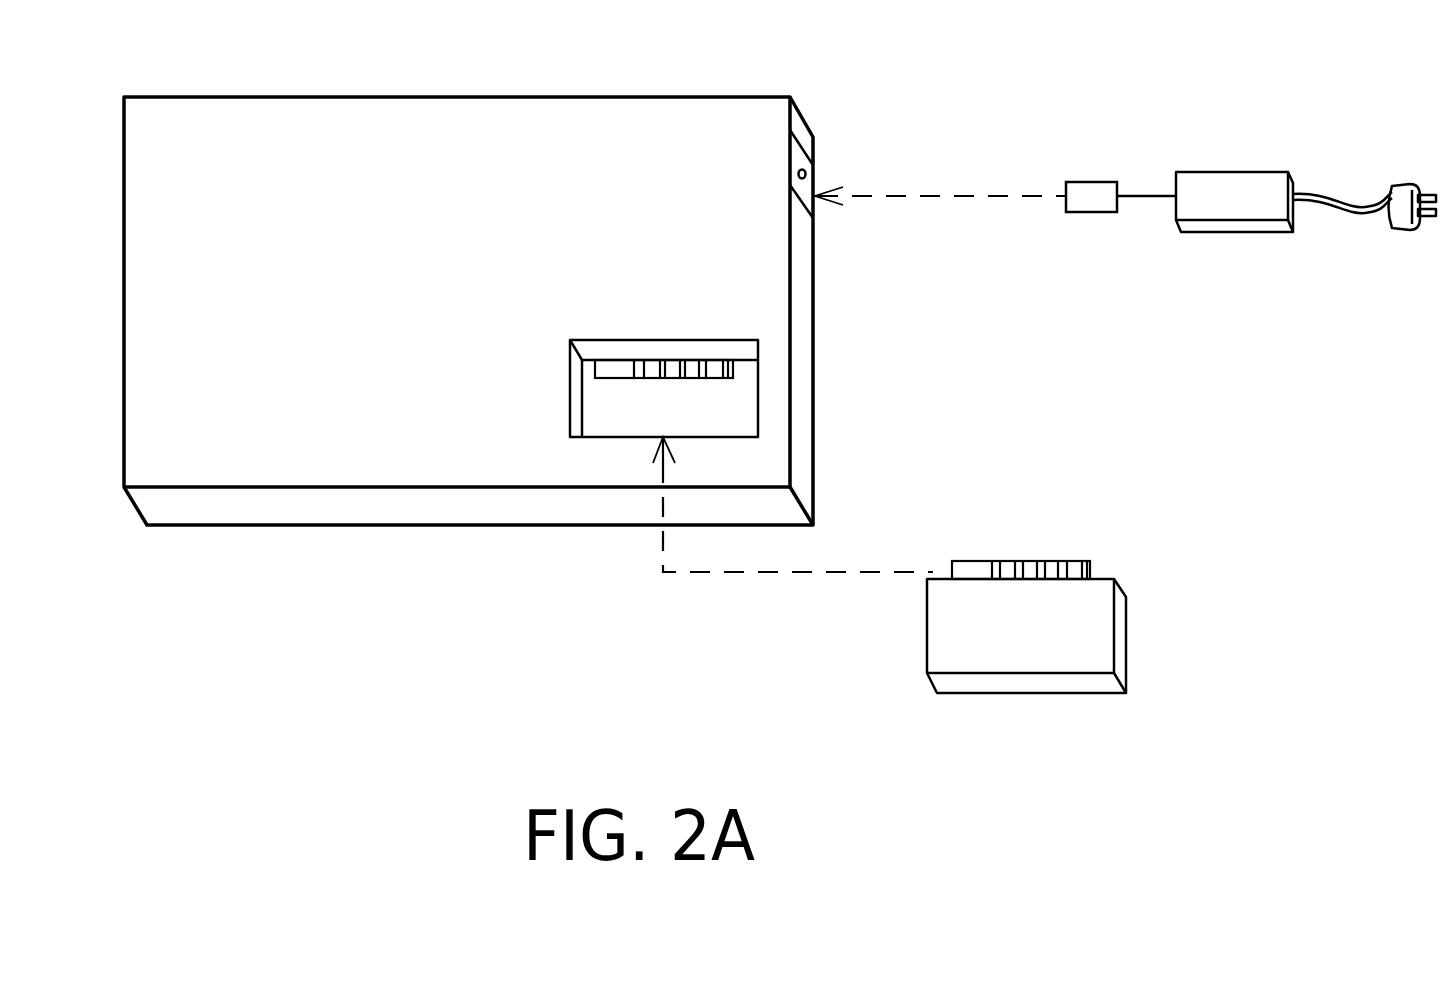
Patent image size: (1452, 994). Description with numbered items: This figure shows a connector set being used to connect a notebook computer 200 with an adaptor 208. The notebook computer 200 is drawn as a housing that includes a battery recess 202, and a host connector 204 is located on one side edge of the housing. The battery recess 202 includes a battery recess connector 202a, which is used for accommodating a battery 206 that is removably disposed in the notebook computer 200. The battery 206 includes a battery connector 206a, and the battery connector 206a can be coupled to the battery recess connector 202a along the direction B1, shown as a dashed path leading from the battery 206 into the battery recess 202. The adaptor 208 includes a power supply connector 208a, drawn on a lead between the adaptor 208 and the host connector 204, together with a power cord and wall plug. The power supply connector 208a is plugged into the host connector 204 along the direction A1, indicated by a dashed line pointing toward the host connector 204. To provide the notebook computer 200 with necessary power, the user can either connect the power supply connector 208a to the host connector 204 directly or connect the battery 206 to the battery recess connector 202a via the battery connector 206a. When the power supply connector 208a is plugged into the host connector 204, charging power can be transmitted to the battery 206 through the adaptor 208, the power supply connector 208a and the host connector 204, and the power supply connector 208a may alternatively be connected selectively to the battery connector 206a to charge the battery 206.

The notebook computer 200 is at (212, 157).
The battery recess 202 is at (725, 415).
The battery recess connector 202a is at (611, 378).
The host connector 204 is at (815, 173).
The battery 206 is at (1046, 650).
The battery connector 206a is at (1089, 561).
The adaptor 208 is at (1250, 213).
The power supply connector 208a is at (1092, 182).
The direction A1 is at (960, 196).
The direction B1 is at (850, 572).